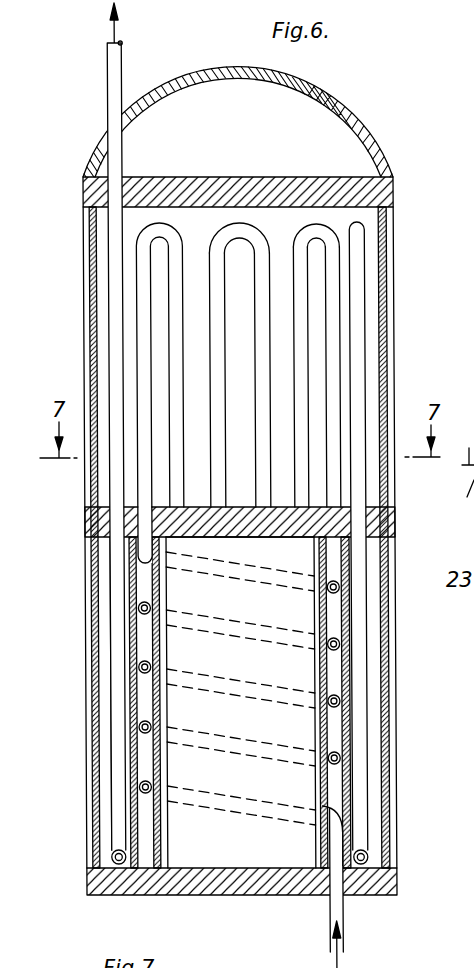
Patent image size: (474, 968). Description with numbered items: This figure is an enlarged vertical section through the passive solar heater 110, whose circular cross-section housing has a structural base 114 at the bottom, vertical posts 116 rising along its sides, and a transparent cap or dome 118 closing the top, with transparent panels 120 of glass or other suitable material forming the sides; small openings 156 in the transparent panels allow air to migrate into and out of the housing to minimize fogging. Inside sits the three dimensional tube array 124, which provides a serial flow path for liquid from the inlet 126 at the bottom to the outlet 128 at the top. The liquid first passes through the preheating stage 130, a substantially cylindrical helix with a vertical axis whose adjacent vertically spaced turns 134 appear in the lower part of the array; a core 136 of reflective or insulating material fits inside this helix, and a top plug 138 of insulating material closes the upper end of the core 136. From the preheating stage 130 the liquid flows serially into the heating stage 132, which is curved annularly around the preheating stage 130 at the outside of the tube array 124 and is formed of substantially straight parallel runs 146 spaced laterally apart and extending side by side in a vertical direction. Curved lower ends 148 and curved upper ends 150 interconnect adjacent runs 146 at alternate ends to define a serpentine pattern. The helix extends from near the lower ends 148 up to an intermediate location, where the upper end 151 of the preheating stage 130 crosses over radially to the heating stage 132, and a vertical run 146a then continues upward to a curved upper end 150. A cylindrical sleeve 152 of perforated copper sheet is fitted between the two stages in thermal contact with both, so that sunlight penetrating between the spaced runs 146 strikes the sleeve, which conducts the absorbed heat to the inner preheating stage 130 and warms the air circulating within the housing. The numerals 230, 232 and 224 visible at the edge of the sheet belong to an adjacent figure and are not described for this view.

In FIG. 6, the passive solar heater 110 is at (410, 266).
In FIG. 6, the structural base 114 is at (134, 893).
In FIG. 6, the vertical posts 116 is at (393, 345).
In FIG. 6, the transparent cap or dome 118 is at (333, 98).
In FIG. 6, the transparent panels 120 is at (386, 388).
In FIG. 6, the three dimensional tube array 124 is at (108, 580).
In FIG. 6, the inlet 126 is at (330, 918).
In FIG. 6, the outlet 128 is at (124, 55).
In FIG. 6, the preheating stage 130 is at (187, 698).
In FIG. 6, the heating stage 132 is at (205, 313).
In FIG. 6, the vertically spaced turns 134 is at (239, 796).
In FIG. 6, the core 136 is at (328, 677).
In FIG. 6, the top plug 138 is at (262, 538).
In FIG. 6, the straight parallel runs 146 is at (304, 335).
In FIG. 6, the vertical run 146a is at (138, 367).
In FIG. 6, the curved lower ends 148 is at (371, 844).
In FIG. 6, the curved upper ends 150 is at (310, 225).
In FIG. 6, the upper end of the preheating stage 151 is at (165, 552).
In FIG. 6, the cylindrical sleeve 152 is at (130, 640).
In FIG. 6, the small openings 156 is at (95, 240).
In FIG. 7, the element of FIG. 7 (partially shown) 230 is at (457, 623).
In FIG. 7, the element of FIG. 7 (partially shown) 232 is at (460, 710).
In FIG. 7, the element of FIG. 7 (partially shown) 224 is at (460, 931).